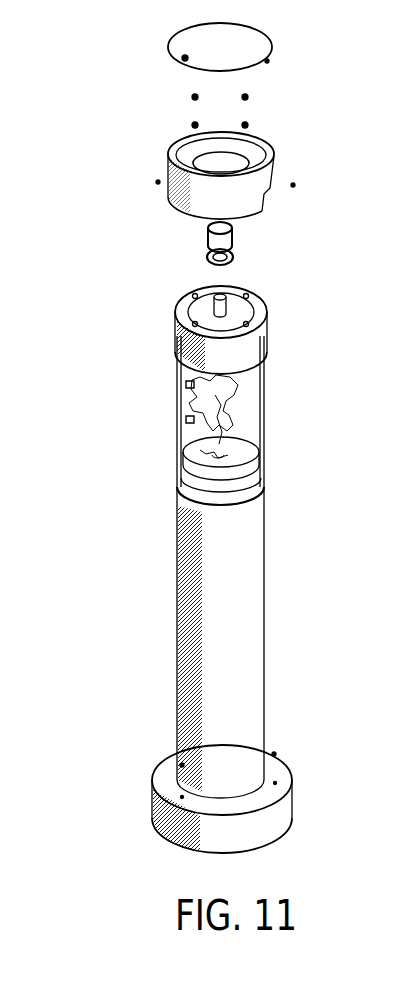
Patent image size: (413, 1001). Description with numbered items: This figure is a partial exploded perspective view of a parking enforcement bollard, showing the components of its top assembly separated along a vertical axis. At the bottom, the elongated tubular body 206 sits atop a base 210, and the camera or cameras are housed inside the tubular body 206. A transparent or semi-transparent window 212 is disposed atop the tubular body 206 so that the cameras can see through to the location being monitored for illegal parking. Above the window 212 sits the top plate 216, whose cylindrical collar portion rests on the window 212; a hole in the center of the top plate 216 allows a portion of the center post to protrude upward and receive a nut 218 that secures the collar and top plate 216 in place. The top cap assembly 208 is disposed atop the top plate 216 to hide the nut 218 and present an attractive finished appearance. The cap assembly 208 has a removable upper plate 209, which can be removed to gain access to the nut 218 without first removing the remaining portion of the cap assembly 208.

The elongated tubular body 206 is at (267, 533).
The top cap assembly 208 is at (163, 136).
The removable upper plate 209 is at (168, 33).
The base 210 is at (273, 752).
The window 212 is at (176, 424).
The top plate 216 is at (176, 320).
The nut 218 is at (204, 236).